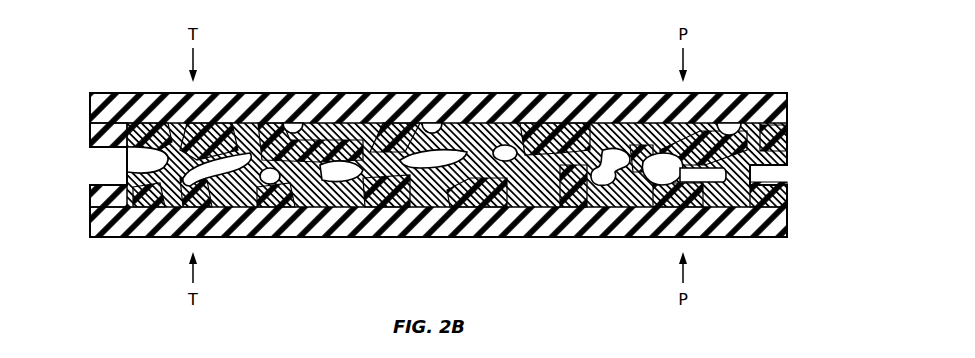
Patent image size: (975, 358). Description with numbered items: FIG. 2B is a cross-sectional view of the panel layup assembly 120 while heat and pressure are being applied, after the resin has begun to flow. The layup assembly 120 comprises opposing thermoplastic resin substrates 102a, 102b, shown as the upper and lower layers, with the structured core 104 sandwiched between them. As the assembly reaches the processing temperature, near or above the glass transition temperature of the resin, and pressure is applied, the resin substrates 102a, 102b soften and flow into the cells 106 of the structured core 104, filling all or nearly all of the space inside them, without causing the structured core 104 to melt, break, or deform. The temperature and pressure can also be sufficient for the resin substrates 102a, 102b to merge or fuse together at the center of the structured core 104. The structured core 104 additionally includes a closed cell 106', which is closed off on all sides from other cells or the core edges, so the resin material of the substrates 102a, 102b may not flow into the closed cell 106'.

The layup assembly 120 is at (447, 149).
The resin substrate 102a is at (778, 113).
The resin substrate 102b is at (778, 217).
The structured core 104 is at (442, 156).
The cells 106 is at (148, 214).
The closed cell 106' is at (541, 96).